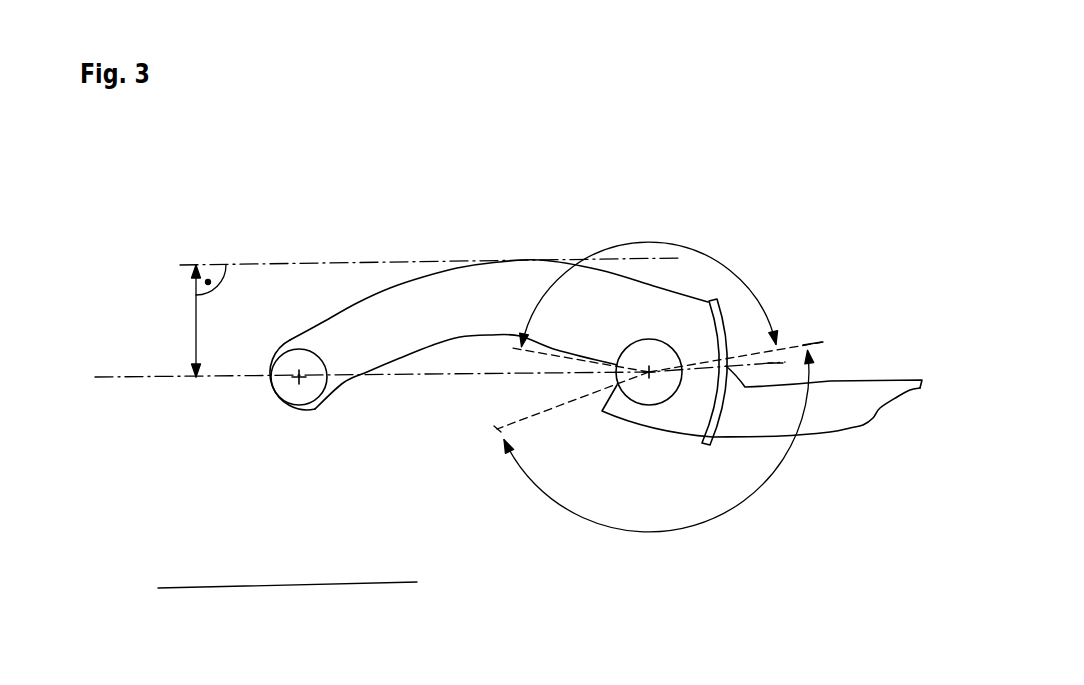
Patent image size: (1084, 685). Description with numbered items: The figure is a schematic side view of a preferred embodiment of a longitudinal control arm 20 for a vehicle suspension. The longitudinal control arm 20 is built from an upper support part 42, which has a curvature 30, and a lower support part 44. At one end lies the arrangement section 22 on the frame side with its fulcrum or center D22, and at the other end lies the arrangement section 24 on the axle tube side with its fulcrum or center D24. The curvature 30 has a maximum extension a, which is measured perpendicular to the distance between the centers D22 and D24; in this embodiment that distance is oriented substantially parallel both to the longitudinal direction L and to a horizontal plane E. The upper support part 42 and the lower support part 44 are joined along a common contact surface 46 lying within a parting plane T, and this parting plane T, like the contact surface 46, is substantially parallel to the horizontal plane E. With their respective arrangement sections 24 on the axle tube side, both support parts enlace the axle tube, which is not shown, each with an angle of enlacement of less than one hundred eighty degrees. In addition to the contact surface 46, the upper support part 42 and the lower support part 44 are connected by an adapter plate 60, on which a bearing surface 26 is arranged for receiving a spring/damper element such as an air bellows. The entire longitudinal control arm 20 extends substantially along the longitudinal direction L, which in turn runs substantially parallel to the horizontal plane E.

The longitudinal control arm 20 is at (567, 352).
The arrangement section on the frame side 22 is at (310, 450).
The arrangement section on the axle tube side 24 is at (591, 370).
The bearing surface 26 is at (825, 415).
The curvature 30 is at (489, 267).
The upper support part 42 is at (463, 292).
The lower support part 44 is at (657, 442).
The contact surface 46 is at (704, 370).
The adapter plate 60 is at (710, 430).
The fulcrum or center of the arrangement section on the frame side D22 is at (300, 380).
The fulcrum or center of the arrangement section on the axle tube side D24 is at (657, 350).
The maximum extension a is at (195, 333).
The horizontal plane E is at (210, 587).
The longitudinal direction L is at (447, 380).
The parting plane T is at (770, 362).